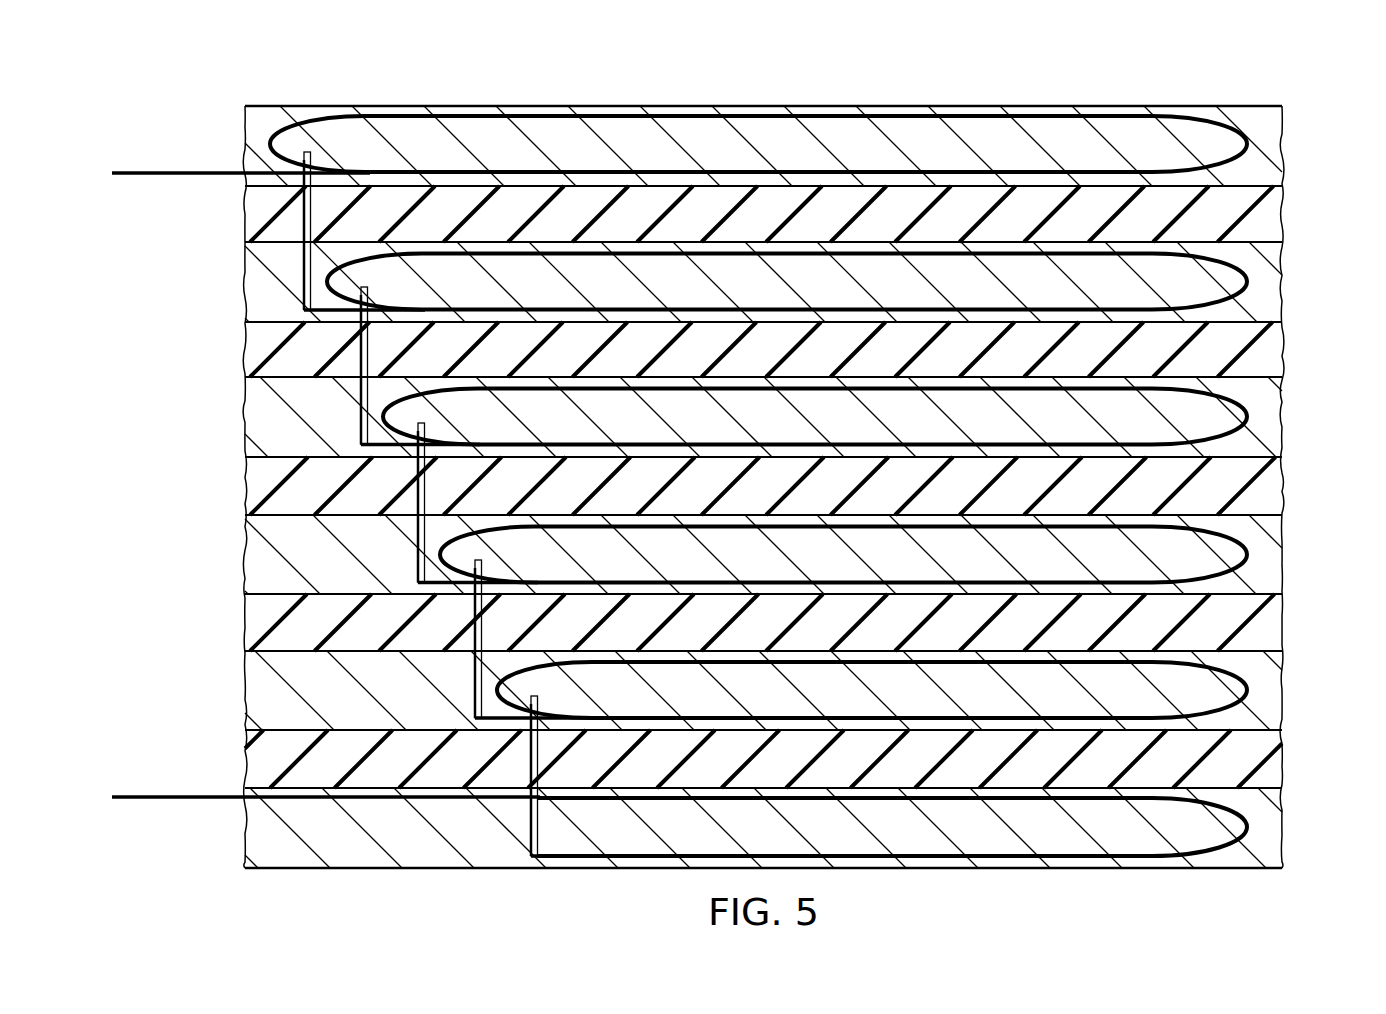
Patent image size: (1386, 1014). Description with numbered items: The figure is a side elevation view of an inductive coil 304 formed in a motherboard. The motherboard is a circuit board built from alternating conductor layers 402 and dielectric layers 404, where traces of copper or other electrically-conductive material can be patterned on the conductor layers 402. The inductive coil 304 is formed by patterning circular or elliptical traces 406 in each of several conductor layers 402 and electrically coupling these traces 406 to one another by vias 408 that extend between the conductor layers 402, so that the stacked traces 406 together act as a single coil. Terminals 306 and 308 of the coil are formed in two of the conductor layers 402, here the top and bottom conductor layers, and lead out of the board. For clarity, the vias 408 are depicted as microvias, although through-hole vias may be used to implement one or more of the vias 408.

The inductive coil 304 is at (515, 67).
The terminal 306 is at (180, 172).
The terminal 308 is at (178, 800).
The conductor layer 402 is at (1283, 826).
The dielectric layer 404 is at (1283, 760).
The trace 406 is at (1225, 868).
The via 408 is at (530, 820).